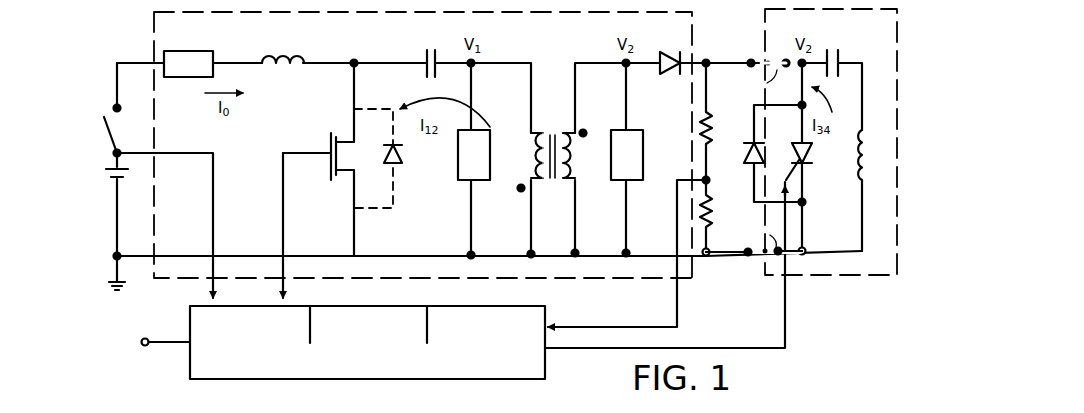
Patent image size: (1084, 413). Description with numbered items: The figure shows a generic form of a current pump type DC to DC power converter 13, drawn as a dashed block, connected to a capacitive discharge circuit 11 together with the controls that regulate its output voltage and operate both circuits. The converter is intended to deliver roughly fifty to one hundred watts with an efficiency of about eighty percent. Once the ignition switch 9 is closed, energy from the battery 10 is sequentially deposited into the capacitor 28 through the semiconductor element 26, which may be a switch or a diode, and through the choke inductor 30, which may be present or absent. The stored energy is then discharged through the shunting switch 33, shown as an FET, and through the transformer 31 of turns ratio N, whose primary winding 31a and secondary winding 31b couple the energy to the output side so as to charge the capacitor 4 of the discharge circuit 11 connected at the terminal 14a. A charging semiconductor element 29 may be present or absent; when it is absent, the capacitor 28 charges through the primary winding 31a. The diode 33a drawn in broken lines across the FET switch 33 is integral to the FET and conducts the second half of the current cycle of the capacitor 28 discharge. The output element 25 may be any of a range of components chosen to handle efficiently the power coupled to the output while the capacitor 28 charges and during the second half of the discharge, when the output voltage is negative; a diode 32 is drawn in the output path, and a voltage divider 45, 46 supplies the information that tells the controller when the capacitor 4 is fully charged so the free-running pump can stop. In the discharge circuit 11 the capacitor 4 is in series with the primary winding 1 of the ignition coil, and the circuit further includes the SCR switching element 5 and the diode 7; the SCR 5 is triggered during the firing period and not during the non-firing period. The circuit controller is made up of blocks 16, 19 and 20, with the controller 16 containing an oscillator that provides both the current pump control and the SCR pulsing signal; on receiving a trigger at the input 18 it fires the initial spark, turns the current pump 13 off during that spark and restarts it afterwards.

The primary winding 1 is at (869, 190).
The capacitor 4 is at (847, 81).
The SCR switching element 5 is at (805, 180).
The diode 7 is at (768, 134).
The ignition switch 9 is at (117, 108).
The battery 10 is at (107, 220).
The CD circuit 11 is at (771, 276).
The current pump type DC to DC power converter 13 is at (153, 22).
The terminal 14a is at (784, 63).
The controller 16 is at (367, 342).
The input 18 is at (117, 347).
The controller block 19 is at (368, 324).
The controller block 20 is at (486, 324).
The output element 25 is at (627, 158).
The semiconductor element 26 is at (188, 54).
The capacitor 28 is at (430, 53).
The charging semiconductor element 29 is at (474, 159).
The choke inductor 30 is at (283, 48).
The transformer 31 is at (552, 194).
The primary winding 31a is at (522, 162).
The secondary winding 31b is at (582, 154).
The diode 32 is at (667, 49).
The shunting switch 33 is at (320, 158).
The diode 33a is at (393, 158).
The voltage divider 45 is at (716, 216).
The voltage divider 46 is at (694, 120).